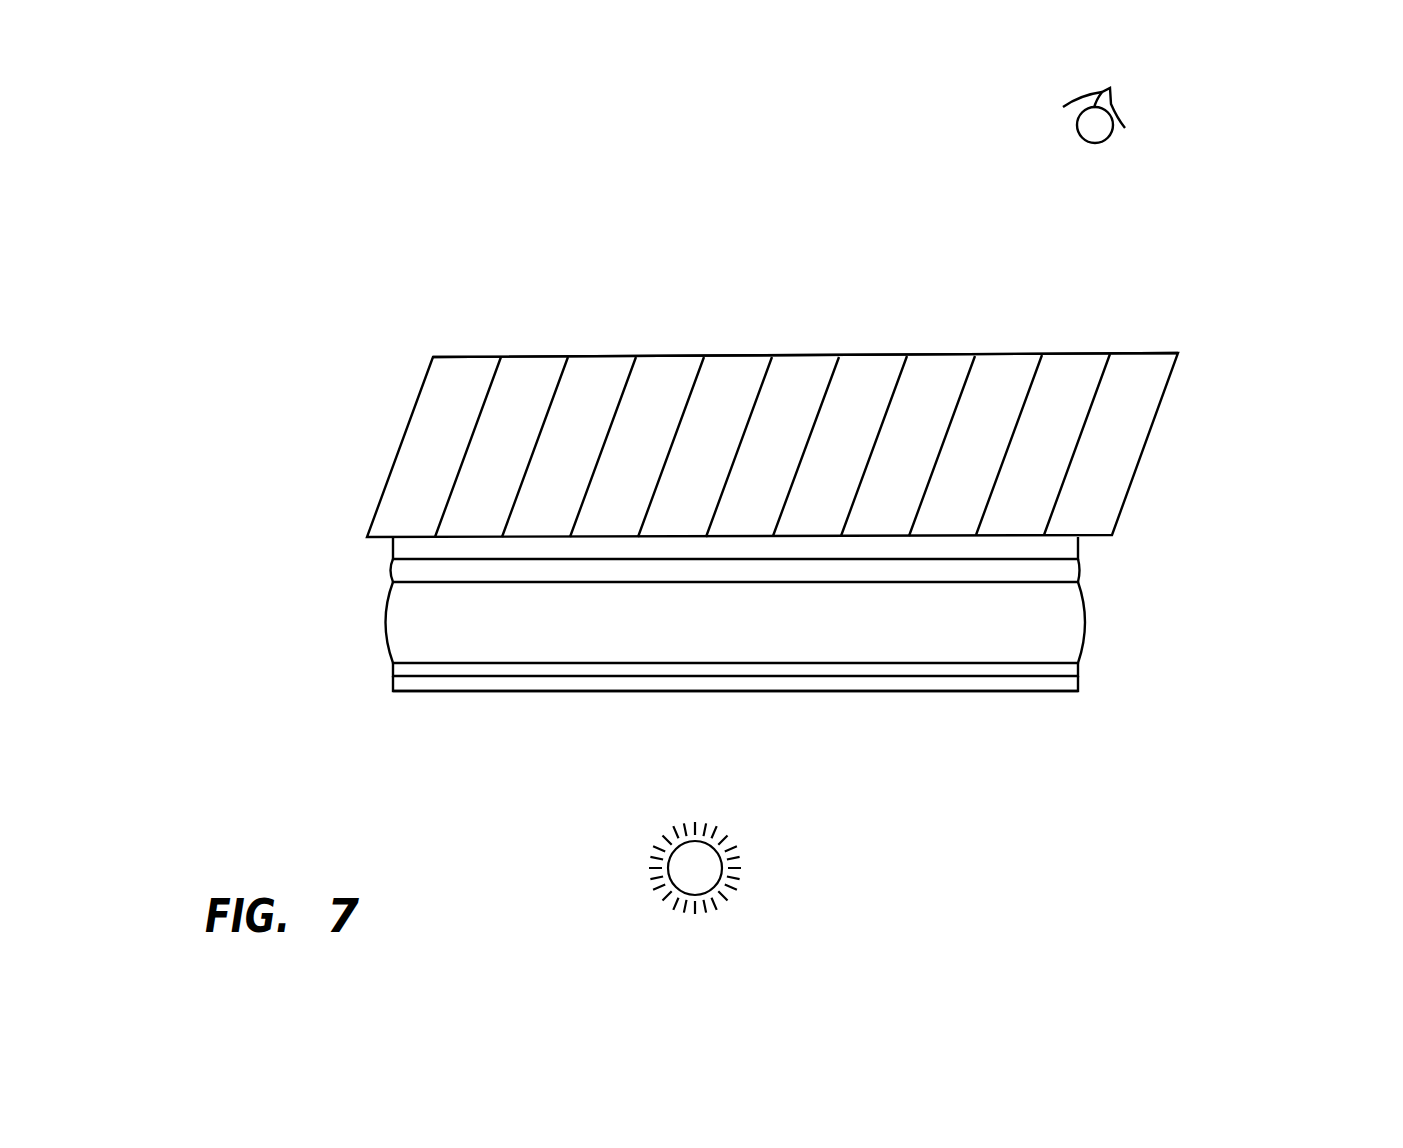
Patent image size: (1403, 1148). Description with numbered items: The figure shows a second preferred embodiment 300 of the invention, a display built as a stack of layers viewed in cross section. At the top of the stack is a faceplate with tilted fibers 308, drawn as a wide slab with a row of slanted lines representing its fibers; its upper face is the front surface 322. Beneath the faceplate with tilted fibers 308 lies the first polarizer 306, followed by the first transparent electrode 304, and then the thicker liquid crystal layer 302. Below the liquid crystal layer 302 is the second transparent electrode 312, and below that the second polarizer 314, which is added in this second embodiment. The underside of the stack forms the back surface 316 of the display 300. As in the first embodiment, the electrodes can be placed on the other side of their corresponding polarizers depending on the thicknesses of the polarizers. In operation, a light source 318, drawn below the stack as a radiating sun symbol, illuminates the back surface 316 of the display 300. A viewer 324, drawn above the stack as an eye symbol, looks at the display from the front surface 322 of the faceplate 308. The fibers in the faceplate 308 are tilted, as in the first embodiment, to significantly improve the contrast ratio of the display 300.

The second preferred embodiment 300 is at (1226, 273).
The liquid crystal layer 302 is at (1088, 622).
The first transparent electrode 304 is at (1078, 571).
The first polarizer 306 is at (1078, 548).
The faceplate with tilted fibers 308 is at (1137, 432).
The second transparent electrode 312 is at (1078, 668).
The second polarizer 314 is at (1078, 683).
The back surface 316 is at (965, 691).
The light source 318 is at (748, 872).
The front surface 322 is at (1163, 354).
The viewer 324 is at (1140, 138).